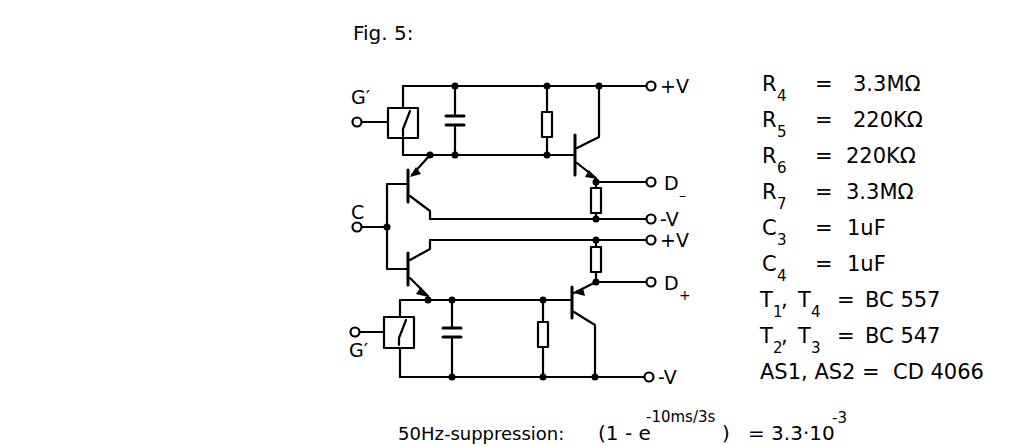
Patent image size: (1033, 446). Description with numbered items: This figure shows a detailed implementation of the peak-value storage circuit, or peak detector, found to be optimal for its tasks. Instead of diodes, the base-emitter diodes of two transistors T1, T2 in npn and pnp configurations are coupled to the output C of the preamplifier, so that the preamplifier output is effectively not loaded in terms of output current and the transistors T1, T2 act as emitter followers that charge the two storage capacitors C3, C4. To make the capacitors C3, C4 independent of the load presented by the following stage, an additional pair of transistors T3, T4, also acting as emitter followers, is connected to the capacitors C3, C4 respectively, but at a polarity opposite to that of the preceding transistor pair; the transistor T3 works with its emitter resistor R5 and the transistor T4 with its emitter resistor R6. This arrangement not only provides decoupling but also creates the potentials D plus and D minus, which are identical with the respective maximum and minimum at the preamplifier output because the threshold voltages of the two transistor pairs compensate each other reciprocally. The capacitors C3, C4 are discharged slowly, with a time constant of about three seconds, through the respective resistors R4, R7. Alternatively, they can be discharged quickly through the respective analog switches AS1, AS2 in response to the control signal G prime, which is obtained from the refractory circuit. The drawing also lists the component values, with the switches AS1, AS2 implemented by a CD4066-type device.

The resistor R4 is at (561, 120).
The resistor R5 is at (610, 201).
The resistor R6 is at (610, 261).
The resistor R7 is at (558, 338).
The capacitor C3 is at (469, 120).
The capacitor C4 is at (466, 338).
The transistor T1 is at (427, 187).
The transistor T2 is at (427, 270).
The transistor T3 is at (597, 135).
The transistor T4 is at (594, 329).
The analog switch AS1 is at (388, 121).
The analog switch AS2 is at (385, 335).